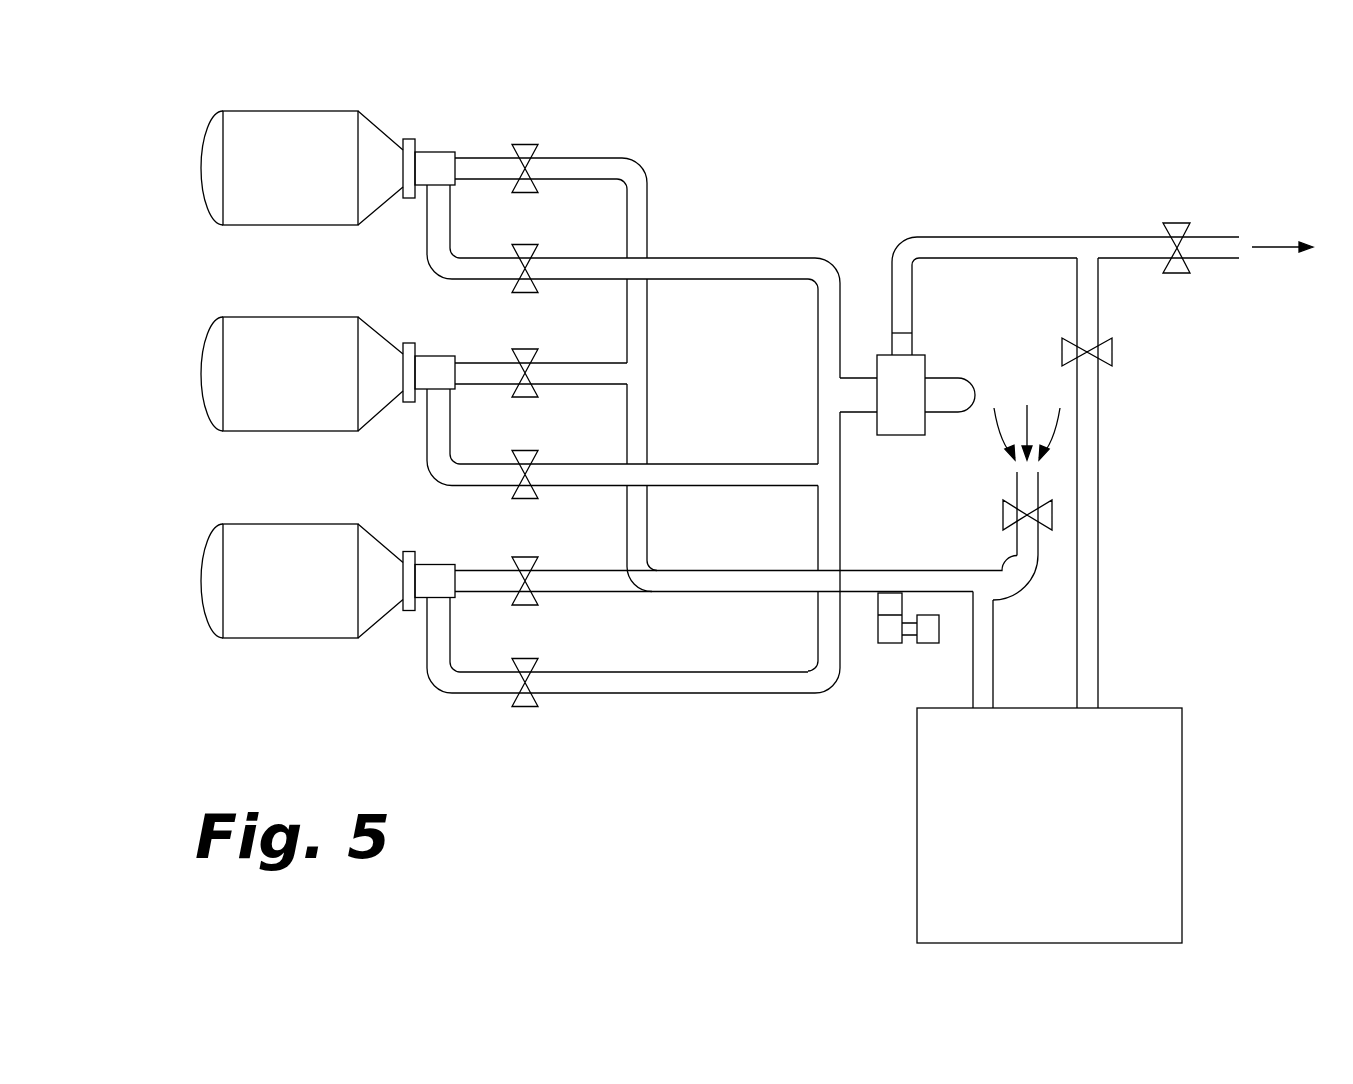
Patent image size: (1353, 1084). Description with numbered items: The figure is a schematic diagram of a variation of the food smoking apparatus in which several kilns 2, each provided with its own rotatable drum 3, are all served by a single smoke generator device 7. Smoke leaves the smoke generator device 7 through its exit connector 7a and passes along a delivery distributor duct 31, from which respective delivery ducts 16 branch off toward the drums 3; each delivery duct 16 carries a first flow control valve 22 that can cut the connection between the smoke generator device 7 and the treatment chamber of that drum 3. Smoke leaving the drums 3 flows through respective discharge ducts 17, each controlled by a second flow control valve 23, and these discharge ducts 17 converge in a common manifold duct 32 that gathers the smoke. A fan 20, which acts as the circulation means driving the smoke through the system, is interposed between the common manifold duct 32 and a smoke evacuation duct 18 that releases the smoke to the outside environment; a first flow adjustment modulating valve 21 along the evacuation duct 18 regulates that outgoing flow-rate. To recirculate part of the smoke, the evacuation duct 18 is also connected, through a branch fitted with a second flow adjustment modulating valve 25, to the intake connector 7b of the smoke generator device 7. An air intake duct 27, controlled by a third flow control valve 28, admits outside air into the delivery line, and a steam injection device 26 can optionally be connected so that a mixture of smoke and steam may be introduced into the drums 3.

The kiln 2 is at (272, 405).
The drum 3 is at (290, 193).
The delivery duct 16 is at (582, 158).
The discharge duct 17 is at (590, 270).
The smoke evacuation duct 18 is at (1130, 240).
The fan 20 is at (907, 370).
The first flow adjustment modulating valve 21 is at (1175, 225).
The first flow control valve 22 is at (524, 141).
The second flow control valve 23 is at (524, 243).
The second flow adjustment modulating valve 25 is at (1108, 352).
The steam injection device 26 is at (895, 660).
The air intake duct 27 is at (1020, 488).
The third flow control valve 28 is at (1053, 517).
The delivery distributor duct 31 is at (638, 418).
The common manifold duct 32 is at (840, 535).
The smoke generator device 7 is at (1120, 830).
The exit connector 7a is at (985, 670).
The intake connector 7b is at (1087, 678).